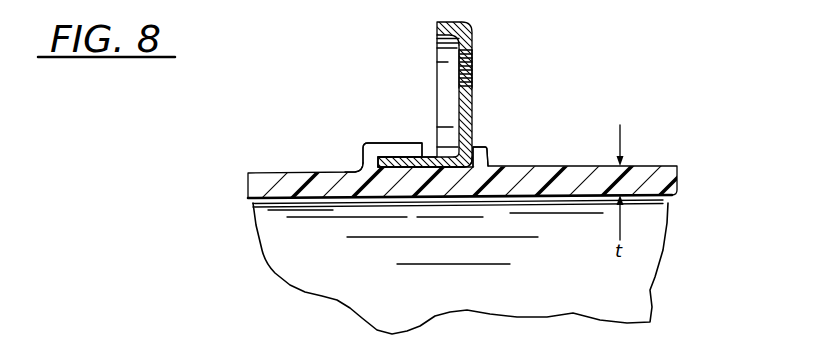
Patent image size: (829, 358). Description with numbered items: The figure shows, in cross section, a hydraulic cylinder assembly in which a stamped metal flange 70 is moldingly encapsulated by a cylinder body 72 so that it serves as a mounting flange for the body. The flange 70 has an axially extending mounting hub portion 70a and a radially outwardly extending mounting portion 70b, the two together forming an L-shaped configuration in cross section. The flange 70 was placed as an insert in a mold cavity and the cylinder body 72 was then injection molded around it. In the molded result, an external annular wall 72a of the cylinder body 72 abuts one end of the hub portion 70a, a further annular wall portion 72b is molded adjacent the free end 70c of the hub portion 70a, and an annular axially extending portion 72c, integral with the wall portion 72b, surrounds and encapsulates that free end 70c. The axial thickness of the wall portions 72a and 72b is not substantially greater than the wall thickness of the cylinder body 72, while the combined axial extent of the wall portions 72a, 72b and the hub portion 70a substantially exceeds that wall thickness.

The flange 70 is at (480, 95).
The mounting hub portion 70a is at (412, 157).
The mounting portion 70b is at (472, 40).
The free end 70c is at (393, 168).
The cylinder body 72 is at (298, 160).
The external annular wall 72a is at (484, 157).
The annular wall portion 72b is at (362, 164).
The axially extending portion 72c is at (375, 142).